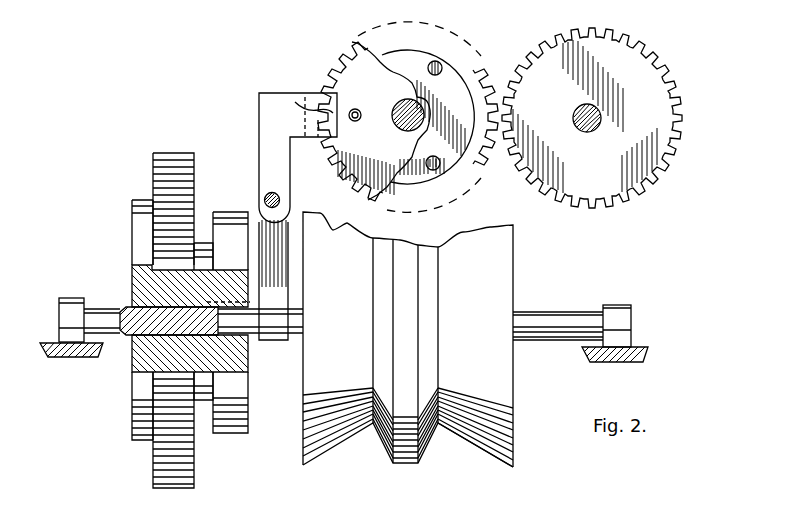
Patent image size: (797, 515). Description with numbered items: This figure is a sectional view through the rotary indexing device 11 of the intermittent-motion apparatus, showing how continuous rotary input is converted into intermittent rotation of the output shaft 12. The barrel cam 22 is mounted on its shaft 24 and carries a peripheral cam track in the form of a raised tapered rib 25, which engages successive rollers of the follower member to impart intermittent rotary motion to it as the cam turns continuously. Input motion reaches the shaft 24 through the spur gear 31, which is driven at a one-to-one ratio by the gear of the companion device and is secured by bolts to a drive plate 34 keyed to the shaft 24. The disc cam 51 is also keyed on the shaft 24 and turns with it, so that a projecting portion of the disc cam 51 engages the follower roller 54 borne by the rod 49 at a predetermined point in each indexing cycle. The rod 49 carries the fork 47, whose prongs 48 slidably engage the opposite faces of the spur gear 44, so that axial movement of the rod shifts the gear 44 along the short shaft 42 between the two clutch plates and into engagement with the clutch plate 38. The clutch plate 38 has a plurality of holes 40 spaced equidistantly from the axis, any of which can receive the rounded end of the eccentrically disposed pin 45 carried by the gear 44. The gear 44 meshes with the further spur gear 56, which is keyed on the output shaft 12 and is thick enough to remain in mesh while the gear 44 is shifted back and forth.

The rotary indexing device 11 is at (527, 458).
The output shaft 12 is at (598, 125).
The barrel cam 22 is at (500, 387).
The shaft 24 is at (580, 293).
The raised tapered rib 25 is at (425, 455).
The spur gear 31 is at (153, 167).
The drive plate 34 is at (137, 221).
The clutch plate 38 is at (398, 52).
The holes 40 is at (440, 66).
The short shaft 42 is at (407, 128).
The spur gear 44 is at (348, 62).
The eccentrically disposed pin 45 is at (358, 110).
The fork 47 is at (272, 122).
The prongs 48 is at (305, 95).
The rod 49 is at (272, 187).
The disc cam 51 is at (237, 415).
The follower roller 54 is at (250, 340).
The spur gear 56 is at (640, 92).